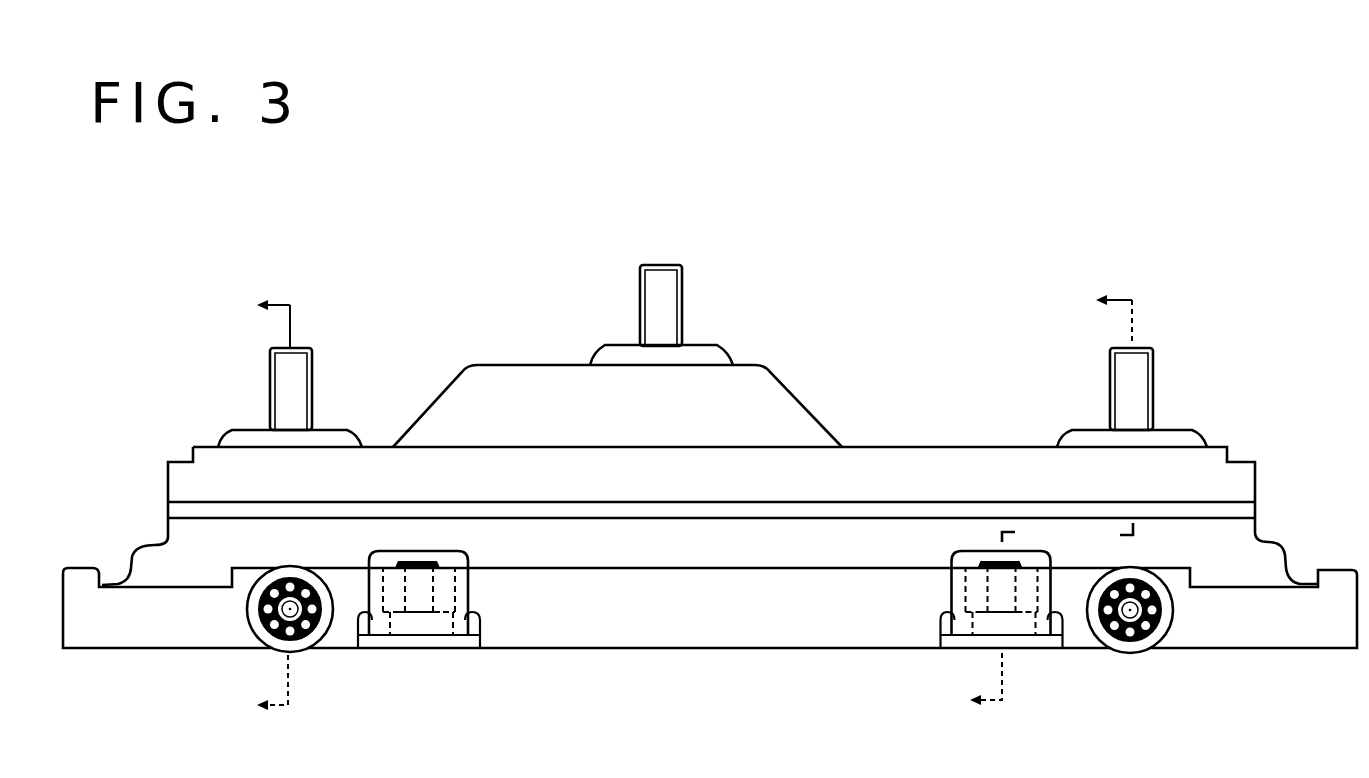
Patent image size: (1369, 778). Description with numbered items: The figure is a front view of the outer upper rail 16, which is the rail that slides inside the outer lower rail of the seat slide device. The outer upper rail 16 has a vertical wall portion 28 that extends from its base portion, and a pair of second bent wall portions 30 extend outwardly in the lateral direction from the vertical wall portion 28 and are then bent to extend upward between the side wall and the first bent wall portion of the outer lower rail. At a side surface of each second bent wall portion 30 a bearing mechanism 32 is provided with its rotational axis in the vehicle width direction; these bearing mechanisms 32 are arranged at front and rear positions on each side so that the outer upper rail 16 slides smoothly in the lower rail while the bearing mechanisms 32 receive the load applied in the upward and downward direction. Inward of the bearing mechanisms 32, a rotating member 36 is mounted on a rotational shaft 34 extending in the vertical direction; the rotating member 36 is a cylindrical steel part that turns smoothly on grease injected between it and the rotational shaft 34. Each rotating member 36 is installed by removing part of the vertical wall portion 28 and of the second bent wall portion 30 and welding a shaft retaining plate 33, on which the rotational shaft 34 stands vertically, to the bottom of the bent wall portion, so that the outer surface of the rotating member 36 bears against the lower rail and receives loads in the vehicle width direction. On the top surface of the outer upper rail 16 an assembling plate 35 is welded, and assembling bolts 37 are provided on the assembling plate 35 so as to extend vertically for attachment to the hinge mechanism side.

The outer upper rail 16 is at (156, 408).
The vertical wall portion 28 is at (1222, 560).
The second bent wall portion 30 is at (712, 612).
The bearing mechanism 32 is at (250, 614).
The shaft retaining plate 33 is at (387, 648).
The rotational shaft 34 is at (423, 605).
The assembling plate 35 is at (797, 400).
The rotating member 36 is at (468, 587).
The assembling bolt 37 is at (312, 378).